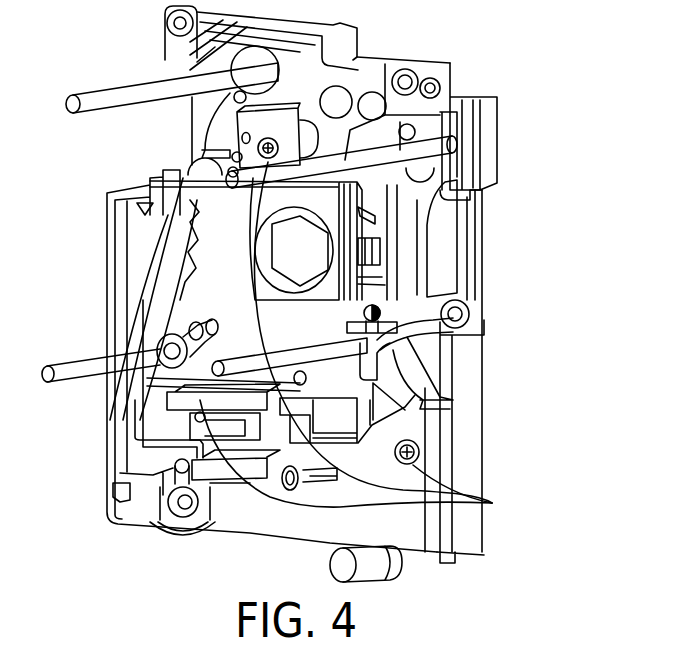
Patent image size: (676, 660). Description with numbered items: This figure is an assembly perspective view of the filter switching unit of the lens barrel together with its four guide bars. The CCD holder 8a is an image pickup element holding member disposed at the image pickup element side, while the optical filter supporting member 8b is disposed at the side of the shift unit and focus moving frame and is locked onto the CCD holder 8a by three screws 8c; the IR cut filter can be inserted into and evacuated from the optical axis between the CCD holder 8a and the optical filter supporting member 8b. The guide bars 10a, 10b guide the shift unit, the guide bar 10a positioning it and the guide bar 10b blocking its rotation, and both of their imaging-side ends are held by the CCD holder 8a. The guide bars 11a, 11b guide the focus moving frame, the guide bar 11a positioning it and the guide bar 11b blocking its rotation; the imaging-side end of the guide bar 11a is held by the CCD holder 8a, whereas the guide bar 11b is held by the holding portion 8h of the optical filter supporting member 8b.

The CCD holder 8a is at (497, 152).
The optical filter supporting member 8b is at (223, 268).
The screws 8c is at (492, 503).
The holding portion 8h is at (183, 328).
The guide bar 10a is at (115, 95).
The guide bar 10b is at (325, 352).
The guide bar 11a is at (345, 158).
The guide bar 11b is at (83, 372).